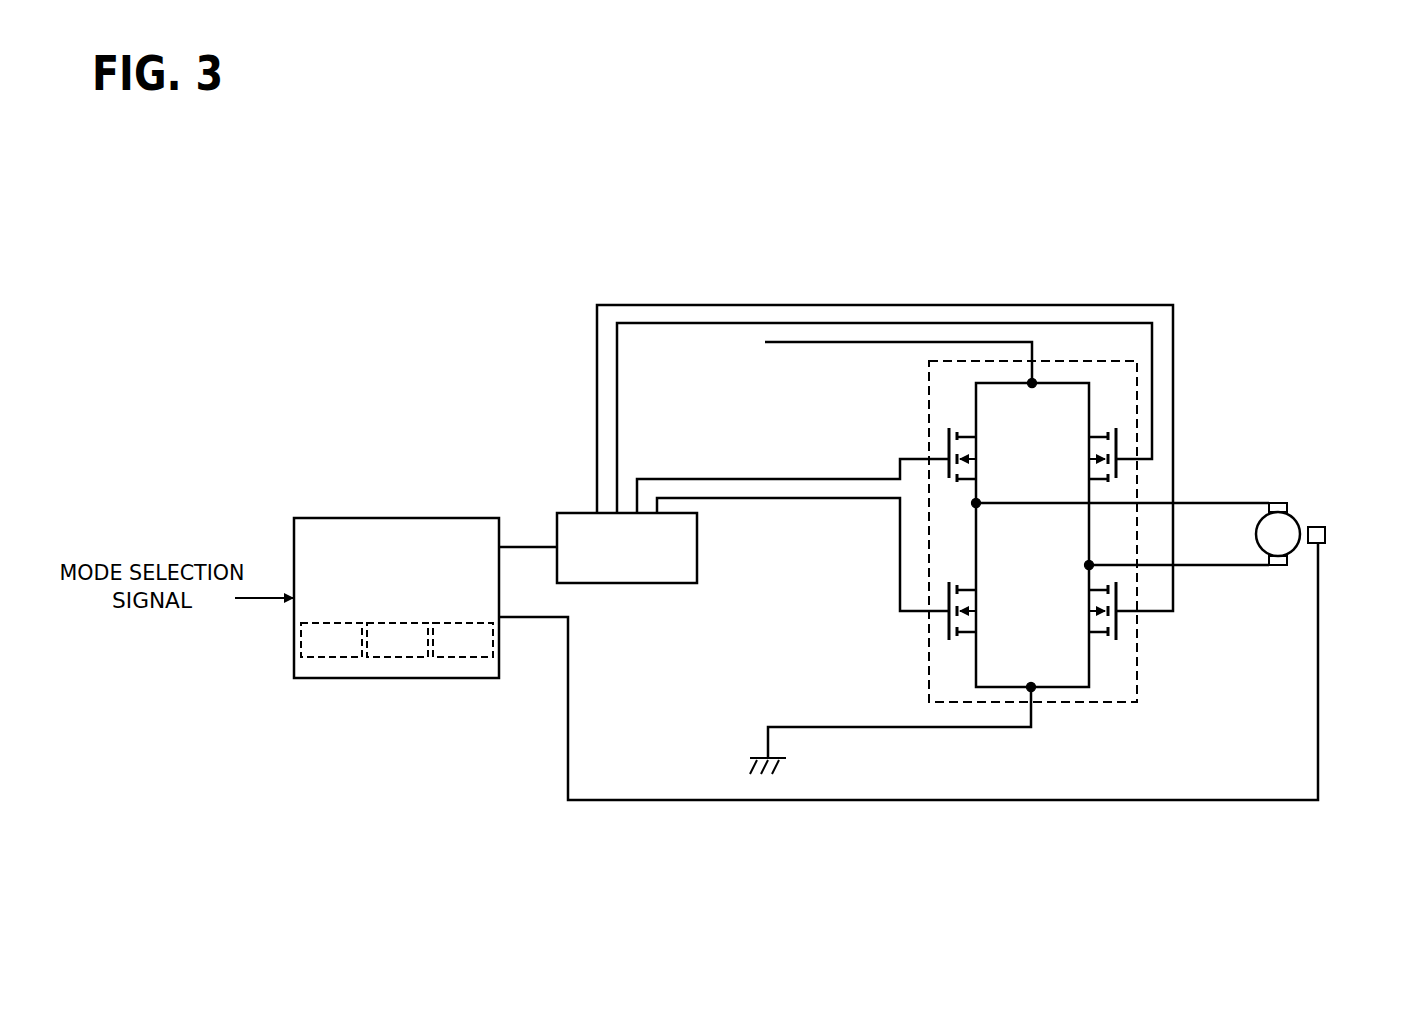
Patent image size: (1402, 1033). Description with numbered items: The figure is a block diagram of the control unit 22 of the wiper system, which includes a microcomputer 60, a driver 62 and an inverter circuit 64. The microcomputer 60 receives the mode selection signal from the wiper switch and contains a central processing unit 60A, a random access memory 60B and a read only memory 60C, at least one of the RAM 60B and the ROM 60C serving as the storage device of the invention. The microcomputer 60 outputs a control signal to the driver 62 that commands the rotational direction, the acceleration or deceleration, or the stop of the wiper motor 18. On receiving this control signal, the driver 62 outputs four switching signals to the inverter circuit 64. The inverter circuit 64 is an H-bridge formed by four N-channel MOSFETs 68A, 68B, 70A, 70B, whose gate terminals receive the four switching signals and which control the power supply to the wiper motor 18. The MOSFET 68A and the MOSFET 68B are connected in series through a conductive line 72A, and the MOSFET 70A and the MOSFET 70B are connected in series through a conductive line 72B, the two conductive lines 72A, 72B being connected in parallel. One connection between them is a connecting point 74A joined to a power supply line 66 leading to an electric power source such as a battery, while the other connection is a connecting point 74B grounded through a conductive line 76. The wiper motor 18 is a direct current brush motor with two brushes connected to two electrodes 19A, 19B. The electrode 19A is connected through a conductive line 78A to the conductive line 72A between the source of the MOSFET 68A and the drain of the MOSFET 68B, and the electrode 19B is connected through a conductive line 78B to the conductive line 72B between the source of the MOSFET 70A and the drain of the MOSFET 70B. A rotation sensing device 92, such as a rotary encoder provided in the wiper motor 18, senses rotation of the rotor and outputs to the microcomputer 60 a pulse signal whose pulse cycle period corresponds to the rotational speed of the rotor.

The wiper motor 18 is at (1292, 513).
The electrode 19A is at (1279, 502).
The electrode 19B is at (1280, 567).
The control unit 22 is at (973, 250).
The microcomputer 60 is at (440, 517).
The central processing unit (CPU) 60A is at (330, 658).
The random access memory (RAM) 60B is at (396, 658).
The read only memory (ROM) 60C is at (461, 658).
The driver 62 is at (627, 585).
The inverter circuit 64 is at (1065, 361).
The power supply line 66 is at (858, 343).
The MOSFET 68A is at (980, 450).
The MOSFET 68B is at (980, 610).
The MOSFET 70A is at (1083, 450).
The MOSFET 70B is at (1083, 610).
The conductive line 72A is at (988, 528).
The conductive line 72B is at (1087, 532).
The connecting point 74A is at (1033, 380).
The connecting point 74B is at (1031, 684).
The conductive line 76 is at (862, 728).
The conductive line 78A is at (1215, 502).
The conductive line 78B is at (1215, 567).
The rotation sensing device 92 is at (1326, 537).